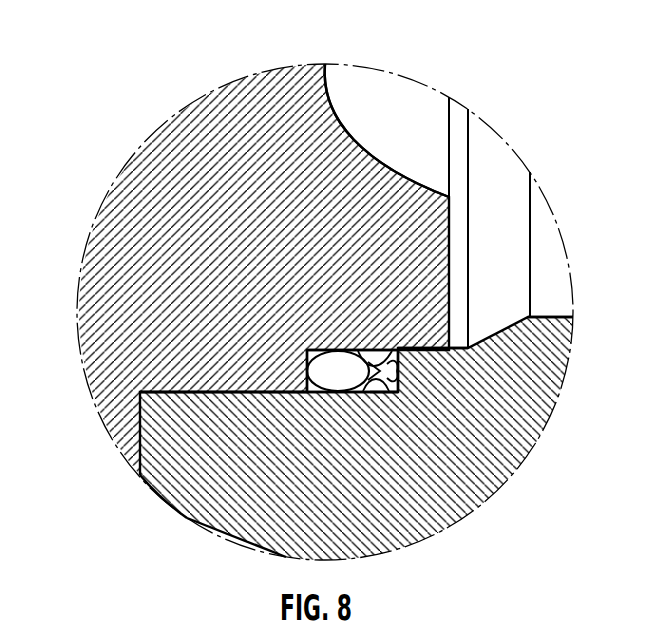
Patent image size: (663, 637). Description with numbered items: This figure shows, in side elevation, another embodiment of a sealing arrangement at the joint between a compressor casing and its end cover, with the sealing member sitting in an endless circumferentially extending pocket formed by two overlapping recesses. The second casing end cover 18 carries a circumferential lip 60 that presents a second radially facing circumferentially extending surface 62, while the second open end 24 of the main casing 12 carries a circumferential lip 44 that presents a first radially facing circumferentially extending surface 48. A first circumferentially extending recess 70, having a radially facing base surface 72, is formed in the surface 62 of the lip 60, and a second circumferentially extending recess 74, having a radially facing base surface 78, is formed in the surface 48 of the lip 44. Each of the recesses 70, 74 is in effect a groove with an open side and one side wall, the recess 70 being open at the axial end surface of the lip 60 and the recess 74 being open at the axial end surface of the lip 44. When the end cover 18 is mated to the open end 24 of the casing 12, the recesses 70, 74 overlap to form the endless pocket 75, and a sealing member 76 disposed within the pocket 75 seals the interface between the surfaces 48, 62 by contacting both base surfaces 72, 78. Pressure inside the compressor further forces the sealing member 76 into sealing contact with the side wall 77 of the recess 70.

The main casing 12 is at (547, 317).
The second casing end cover 18 is at (135, 315).
The second open end 24 is at (242, 533).
The circumferential lip 44 is at (137, 437).
The first radially facing circumferentially extending surface 48 is at (260, 392).
The circumferential lip 60 is at (366, 138).
The second radially facing circumferentially extending surface 62 is at (432, 352).
The first circumferentially extending recess 70 is at (328, 393).
The radially facing base surface 72 is at (368, 352).
The second circumferentially extending recess 74 is at (398, 380).
The endless circumferentially extending pocket 75 is at (330, 351).
The sealing member 76 is at (366, 393).
The side wall 77 is at (306, 380).
The radially facing base surface 78 is at (388, 393).